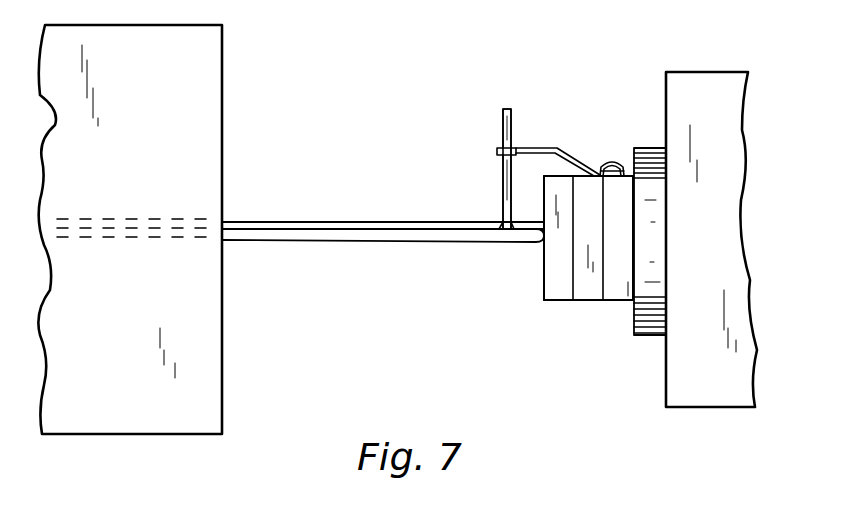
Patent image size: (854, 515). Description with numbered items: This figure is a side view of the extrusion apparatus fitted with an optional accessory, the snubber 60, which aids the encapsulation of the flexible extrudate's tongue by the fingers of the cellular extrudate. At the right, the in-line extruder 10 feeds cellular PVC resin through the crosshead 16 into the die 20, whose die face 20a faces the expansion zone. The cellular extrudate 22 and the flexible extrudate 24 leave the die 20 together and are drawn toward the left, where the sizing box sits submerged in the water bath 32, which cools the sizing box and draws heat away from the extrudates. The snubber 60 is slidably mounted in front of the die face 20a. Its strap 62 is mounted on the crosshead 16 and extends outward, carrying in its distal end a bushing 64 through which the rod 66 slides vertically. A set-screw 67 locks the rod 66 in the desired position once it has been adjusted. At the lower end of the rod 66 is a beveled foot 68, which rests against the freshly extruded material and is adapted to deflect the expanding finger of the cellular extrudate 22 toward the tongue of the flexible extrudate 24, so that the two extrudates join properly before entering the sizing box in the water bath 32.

The in-line extruder 10 is at (705, 72).
The crosshead 16 is at (622, 300).
The die 20 is at (558, 300).
The die face 20a is at (543, 281).
The cellular extrudate 22 is at (347, 241).
The flexible extrudate 24 is at (297, 221).
The water bath 32 is at (222, 80).
The snubber 60 is at (494, 127).
The strap 62 is at (575, 157).
The bushing 64 is at (498, 153).
The rod 66 is at (512, 115).
The set-screw 67 is at (514, 152).
The beveled foot 68 is at (501, 222).